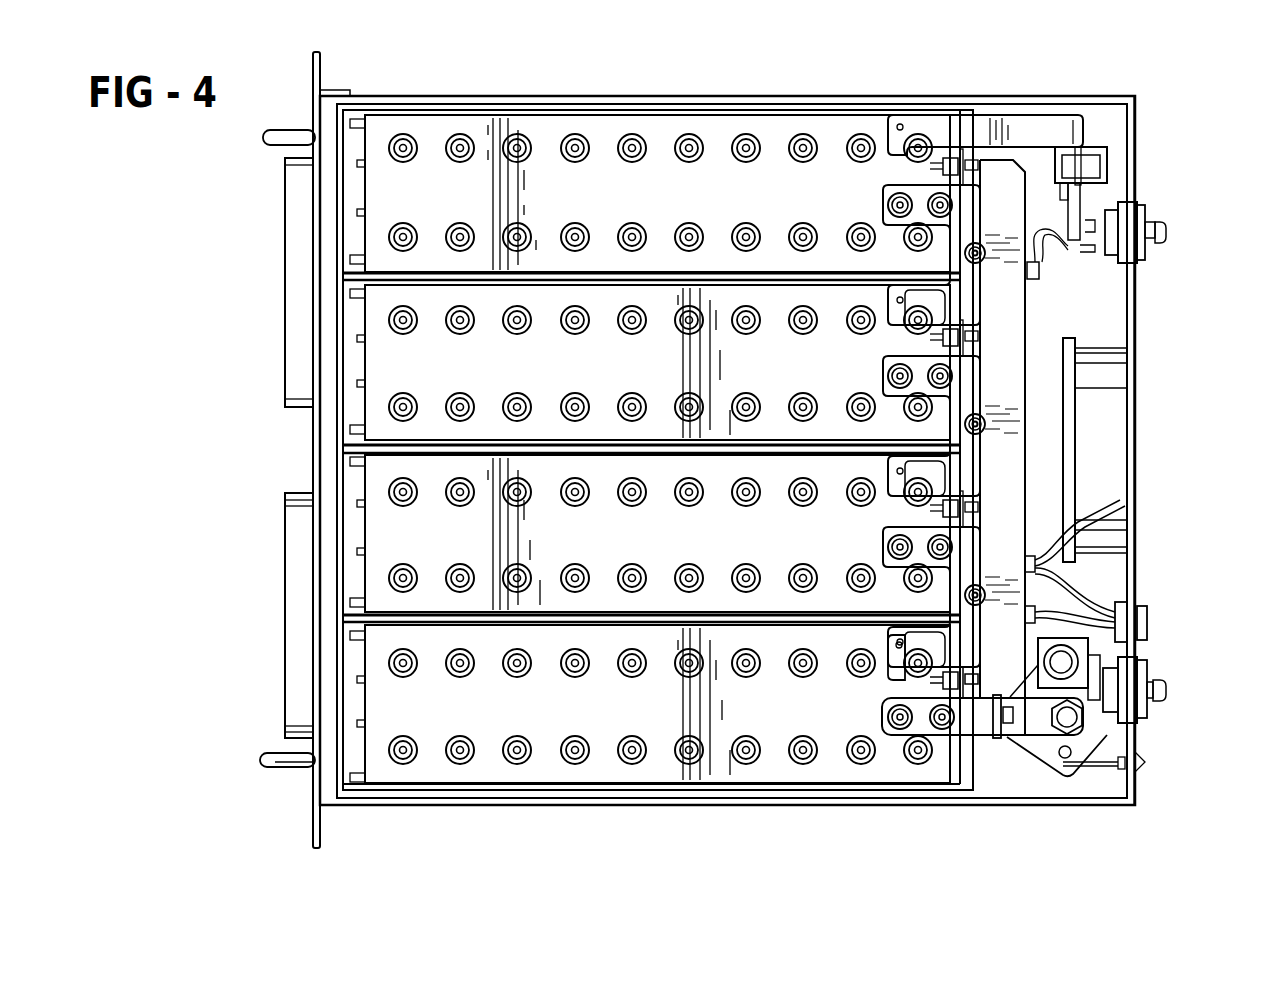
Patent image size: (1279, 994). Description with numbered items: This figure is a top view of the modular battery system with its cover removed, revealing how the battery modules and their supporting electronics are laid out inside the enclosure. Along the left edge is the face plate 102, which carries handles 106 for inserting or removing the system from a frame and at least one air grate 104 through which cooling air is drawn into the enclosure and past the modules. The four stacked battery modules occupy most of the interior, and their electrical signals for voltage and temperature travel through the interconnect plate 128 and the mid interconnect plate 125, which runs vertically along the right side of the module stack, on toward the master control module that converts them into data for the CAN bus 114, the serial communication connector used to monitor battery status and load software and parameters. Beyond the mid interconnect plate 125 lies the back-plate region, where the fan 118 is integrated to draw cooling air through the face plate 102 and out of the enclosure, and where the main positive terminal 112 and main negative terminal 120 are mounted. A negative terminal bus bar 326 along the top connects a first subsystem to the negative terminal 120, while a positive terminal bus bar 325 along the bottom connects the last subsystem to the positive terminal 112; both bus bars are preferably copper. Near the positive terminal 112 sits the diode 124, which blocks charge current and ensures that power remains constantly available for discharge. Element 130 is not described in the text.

The face plate 102 is at (312, 434).
The air grate 104 is at (294, 265).
The handle 106 is at (279, 760).
The positive terminal 112 is at (1162, 695).
The CAN bus 114 is at (1152, 618).
The fan 118 is at (1105, 437).
The negative terminal 120 is at (1165, 214).
The diode 124 is at (1062, 660).
The mid interconnect plate 125 is at (998, 315).
The interconnect plate 128 is at (428, 183).
The sensor / switch 130 is at (1087, 167).
The positive terminal bus bar 325 is at (1030, 722).
The negative terminal bus bar 326 is at (1022, 125).